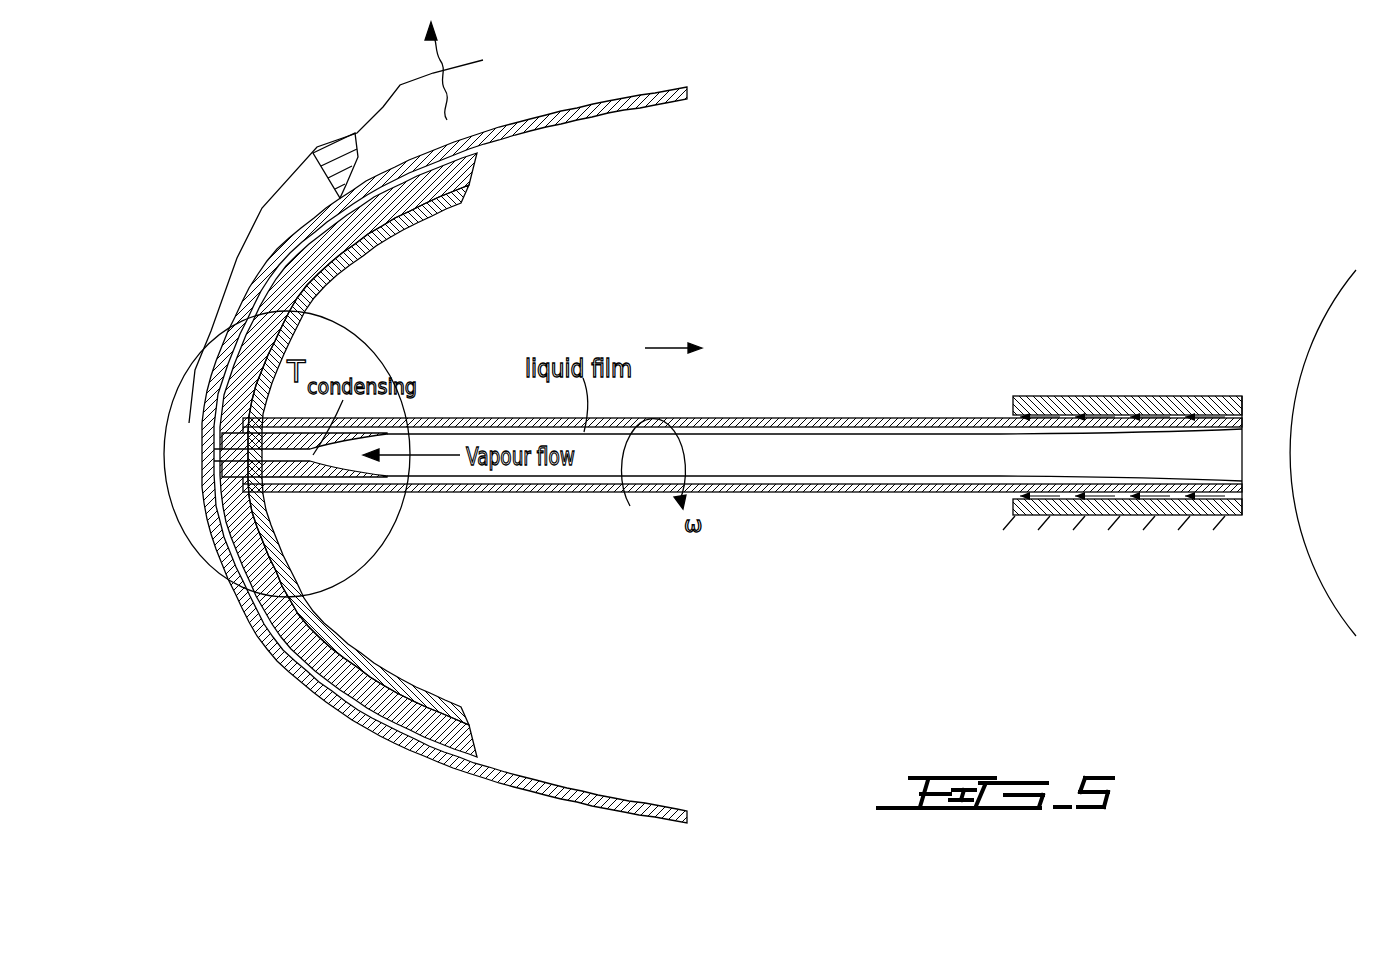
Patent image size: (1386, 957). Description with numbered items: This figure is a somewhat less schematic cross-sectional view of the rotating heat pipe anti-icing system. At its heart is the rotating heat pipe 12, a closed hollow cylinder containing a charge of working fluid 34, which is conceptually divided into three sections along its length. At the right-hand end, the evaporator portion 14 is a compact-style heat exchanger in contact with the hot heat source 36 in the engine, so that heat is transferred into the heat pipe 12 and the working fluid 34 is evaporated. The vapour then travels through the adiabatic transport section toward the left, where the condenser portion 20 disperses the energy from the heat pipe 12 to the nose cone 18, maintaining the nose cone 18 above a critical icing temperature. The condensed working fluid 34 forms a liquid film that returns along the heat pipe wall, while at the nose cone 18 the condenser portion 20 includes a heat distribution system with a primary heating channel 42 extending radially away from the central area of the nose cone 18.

The rotating heat pipe 12 is at (762, 398).
The evaporator portion 14 is at (1179, 526).
The nose cone 18 is at (513, 122).
The condenser portion 20 is at (243, 656).
The working fluid 34 is at (813, 460).
The heat source 36 is at (1294, 323).
The primary heating channel 42 is at (344, 641).